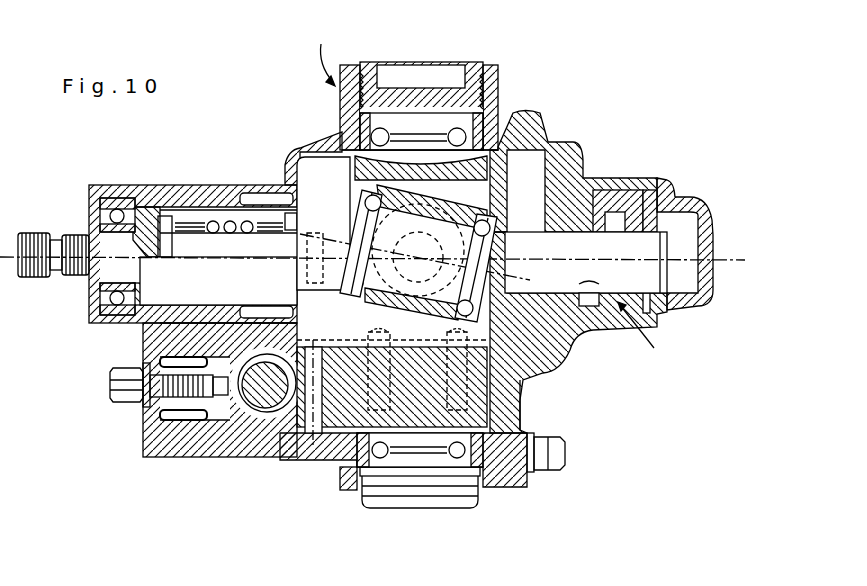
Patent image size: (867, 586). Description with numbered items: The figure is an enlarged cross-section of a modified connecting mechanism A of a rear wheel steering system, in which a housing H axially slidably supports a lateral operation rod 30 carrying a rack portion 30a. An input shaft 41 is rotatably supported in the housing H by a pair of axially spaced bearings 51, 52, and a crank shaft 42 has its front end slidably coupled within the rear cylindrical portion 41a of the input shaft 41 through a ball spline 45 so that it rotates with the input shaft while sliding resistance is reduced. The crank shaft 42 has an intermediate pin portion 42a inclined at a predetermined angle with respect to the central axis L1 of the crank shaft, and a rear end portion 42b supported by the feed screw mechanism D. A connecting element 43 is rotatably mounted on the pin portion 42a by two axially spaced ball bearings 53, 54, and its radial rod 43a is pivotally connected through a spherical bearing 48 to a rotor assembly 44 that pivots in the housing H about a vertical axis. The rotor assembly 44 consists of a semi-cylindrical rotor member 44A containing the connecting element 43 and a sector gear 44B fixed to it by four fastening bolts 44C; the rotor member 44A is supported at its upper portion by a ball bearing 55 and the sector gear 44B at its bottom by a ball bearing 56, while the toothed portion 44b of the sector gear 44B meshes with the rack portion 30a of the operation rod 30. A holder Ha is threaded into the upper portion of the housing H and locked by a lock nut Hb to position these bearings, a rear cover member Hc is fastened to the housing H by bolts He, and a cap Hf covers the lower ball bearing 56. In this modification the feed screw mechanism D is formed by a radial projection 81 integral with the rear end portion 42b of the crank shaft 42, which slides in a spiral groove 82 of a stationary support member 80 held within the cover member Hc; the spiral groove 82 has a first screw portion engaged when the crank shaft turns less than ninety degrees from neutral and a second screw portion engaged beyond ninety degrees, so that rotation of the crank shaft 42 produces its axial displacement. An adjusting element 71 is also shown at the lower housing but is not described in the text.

The operation rod 30 is at (265, 425).
The rack portion 30a is at (308, 440).
The input shaft 41 is at (58, 270).
The rear cylindrical portion 41a is at (177, 212).
The crank shaft 42 is at (263, 250).
The intermediate pin portion 42a is at (357, 297).
The rear end portion 42b is at (657, 238).
The connecting element 43 is at (482, 167).
The radial rod 43a is at (478, 308).
The rotor assembly 44 is at (523, 381).
The semi-cylindrical rotor member 44A is at (533, 147).
The sector gear 44B is at (520, 393).
The fastening bolts 44C is at (377, 340).
The toothed portion 44b is at (318, 443).
The ball spline 45 is at (229, 222).
The spherical bearing 48 is at (365, 203).
The bearing 51 is at (119, 215).
The bearing 52 is at (263, 198).
The ball bearing 53 is at (370, 197).
The ball bearing 54 is at (486, 228).
The ball bearing 55 is at (462, 132).
The ball bearing 56 is at (455, 458).
The adjusting bolt 71 is at (240, 410).
The stationary support member 80 is at (596, 200).
The radial projection 81 is at (590, 320).
The spiral groove 82 is at (615, 200).
The connecting mechanism A is at (325, 54).
The feed screw mechanism D is at (643, 332).
The housing H is at (300, 150).
The holder Ha is at (473, 63).
The lock nut Hb is at (487, 65).
The rear cover member Hc is at (714, 300).
The bolts He is at (563, 455).
The cap Hf is at (470, 512).
The central axis L1 is at (730, 248).